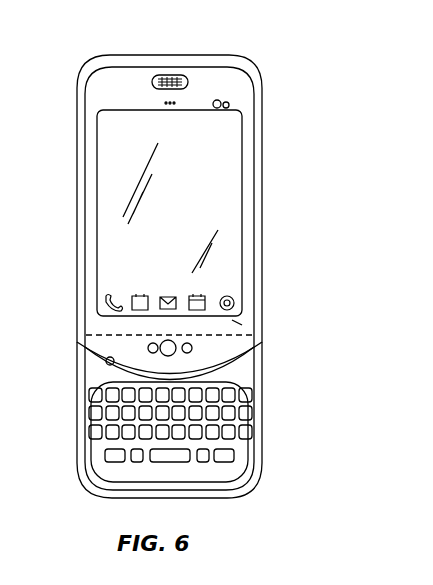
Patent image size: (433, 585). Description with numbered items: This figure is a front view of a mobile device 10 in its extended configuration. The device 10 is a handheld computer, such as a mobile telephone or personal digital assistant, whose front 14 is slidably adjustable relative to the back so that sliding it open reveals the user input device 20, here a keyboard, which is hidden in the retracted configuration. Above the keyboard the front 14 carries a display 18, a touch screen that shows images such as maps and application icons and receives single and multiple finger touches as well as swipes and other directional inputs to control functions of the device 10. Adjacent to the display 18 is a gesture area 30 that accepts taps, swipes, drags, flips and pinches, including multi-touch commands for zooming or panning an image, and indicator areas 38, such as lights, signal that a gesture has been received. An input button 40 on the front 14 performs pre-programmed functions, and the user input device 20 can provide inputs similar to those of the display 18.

The mobile device 10 is at (167, 253).
The front 14 is at (108, 82).
The display 18 is at (232, 186).
The user input device 20 is at (240, 415).
The gesture area 30 is at (238, 322).
The indicator area 38 is at (192, 352).
The input button 40 is at (150, 343).